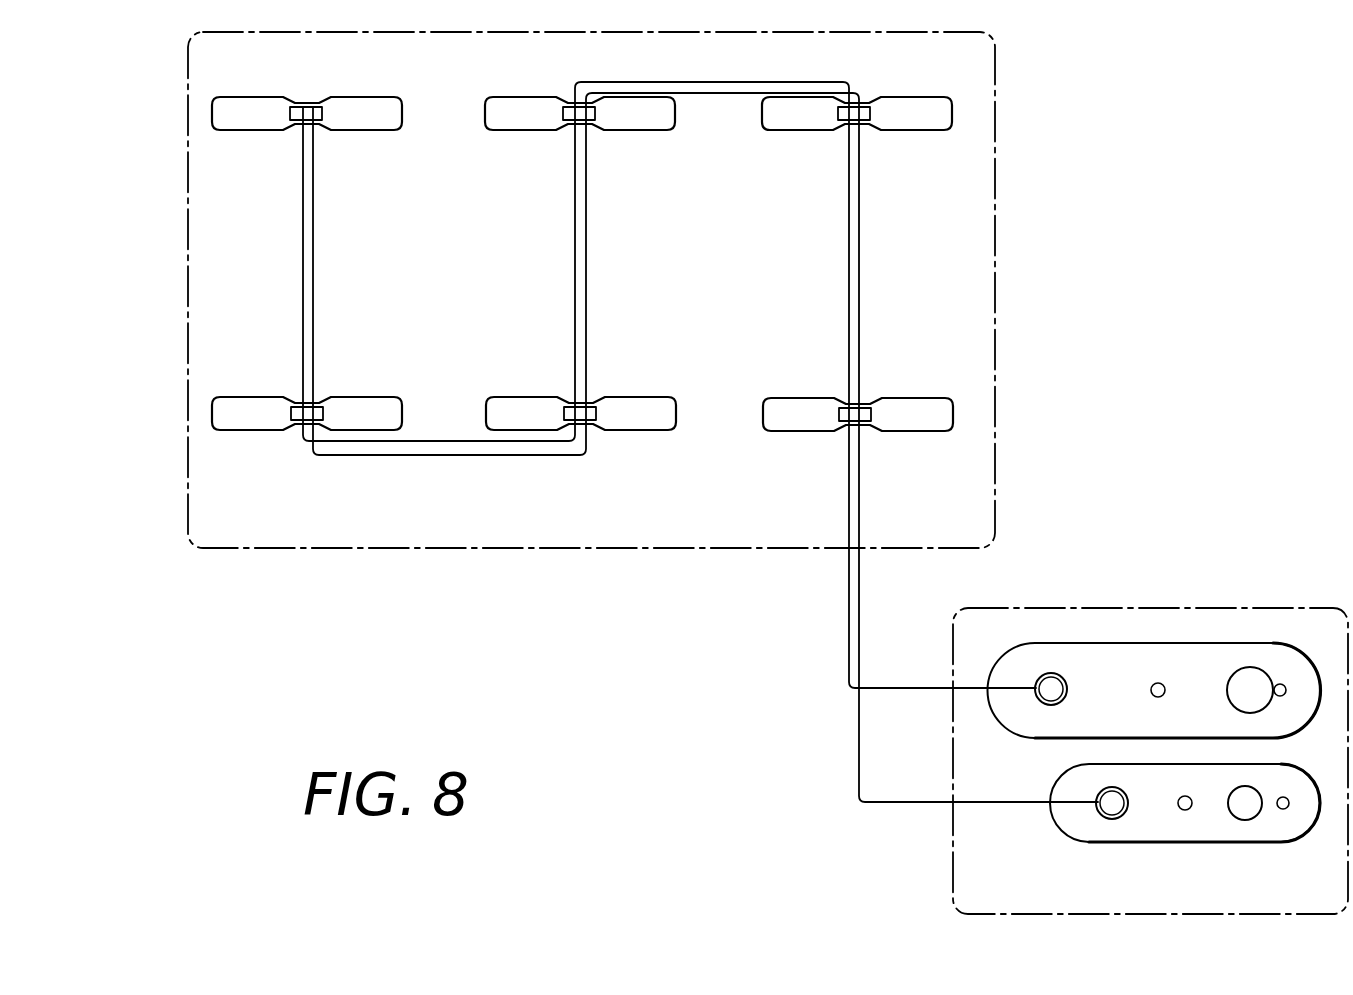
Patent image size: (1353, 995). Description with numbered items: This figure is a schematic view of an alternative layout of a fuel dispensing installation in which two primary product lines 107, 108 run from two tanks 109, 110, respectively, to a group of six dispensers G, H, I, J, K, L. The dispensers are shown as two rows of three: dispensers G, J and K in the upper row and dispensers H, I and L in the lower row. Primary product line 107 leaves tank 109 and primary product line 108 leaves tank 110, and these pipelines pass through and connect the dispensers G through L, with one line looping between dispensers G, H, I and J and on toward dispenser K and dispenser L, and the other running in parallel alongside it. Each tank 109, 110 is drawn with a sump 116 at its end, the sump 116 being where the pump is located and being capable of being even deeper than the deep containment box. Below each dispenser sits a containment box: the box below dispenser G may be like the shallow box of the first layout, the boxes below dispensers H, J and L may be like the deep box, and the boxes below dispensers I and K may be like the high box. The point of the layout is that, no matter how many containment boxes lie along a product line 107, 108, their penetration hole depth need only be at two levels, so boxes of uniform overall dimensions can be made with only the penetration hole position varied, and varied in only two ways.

The dispenser G is at (372, 97).
The dispenser H is at (372, 397).
The dispenser I is at (522, 397).
The dispenser J is at (510, 97).
The dispenser K is at (926, 97).
The dispenser L is at (910, 398).
The primary product line 107 is at (849, 549).
The primary product line 108 is at (849, 635).
The tank 109 is at (1110, 643).
The tank 110 is at (1140, 843).
The sump 116 is at (1036, 682).